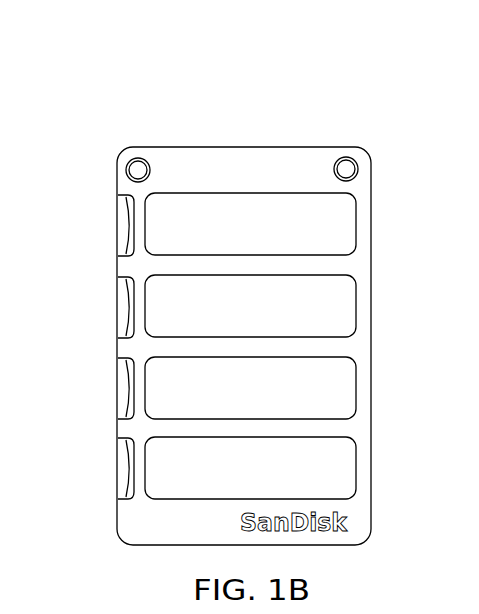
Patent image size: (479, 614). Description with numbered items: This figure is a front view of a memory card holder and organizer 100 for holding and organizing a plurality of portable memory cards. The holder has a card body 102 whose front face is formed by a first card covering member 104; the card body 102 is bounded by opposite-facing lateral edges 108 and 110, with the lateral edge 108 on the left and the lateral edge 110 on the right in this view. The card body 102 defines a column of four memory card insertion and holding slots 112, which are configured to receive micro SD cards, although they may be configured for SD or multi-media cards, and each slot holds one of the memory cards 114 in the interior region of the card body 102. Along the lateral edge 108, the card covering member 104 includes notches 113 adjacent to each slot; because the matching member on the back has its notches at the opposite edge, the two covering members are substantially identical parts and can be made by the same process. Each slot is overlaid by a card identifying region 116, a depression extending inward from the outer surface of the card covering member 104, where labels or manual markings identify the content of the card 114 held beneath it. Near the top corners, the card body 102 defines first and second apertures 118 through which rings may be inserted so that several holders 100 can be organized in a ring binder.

The memory card holder and organizer 100 is at (148, 92).
The card body 102 is at (365, 222).
The first card covering member 104 is at (258, 168).
The lateral edge 108 is at (118, 347).
The lateral edge 110 is at (371, 343).
The memory card insertion and holding slots 112 is at (118, 196).
The notches 113 is at (134, 225).
The memory cards 114 is at (118, 223).
The card identifying regions 116 is at (313, 237).
The apertures 118 is at (140, 166).